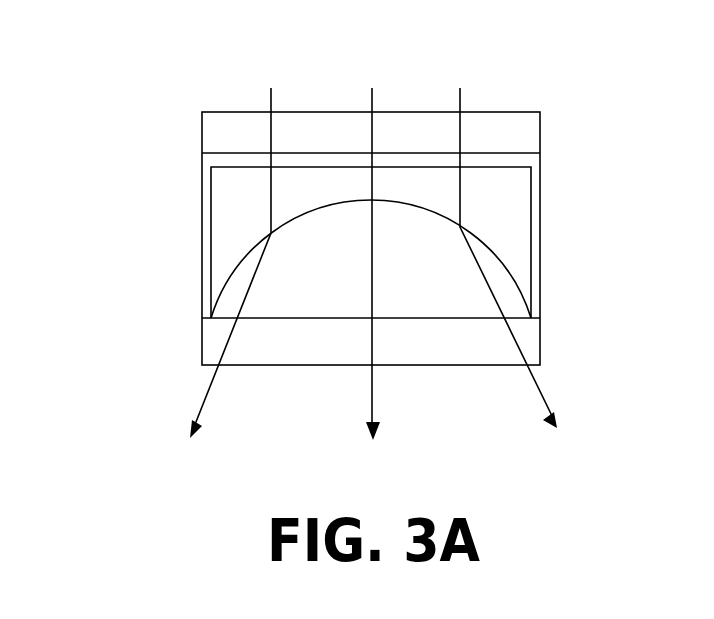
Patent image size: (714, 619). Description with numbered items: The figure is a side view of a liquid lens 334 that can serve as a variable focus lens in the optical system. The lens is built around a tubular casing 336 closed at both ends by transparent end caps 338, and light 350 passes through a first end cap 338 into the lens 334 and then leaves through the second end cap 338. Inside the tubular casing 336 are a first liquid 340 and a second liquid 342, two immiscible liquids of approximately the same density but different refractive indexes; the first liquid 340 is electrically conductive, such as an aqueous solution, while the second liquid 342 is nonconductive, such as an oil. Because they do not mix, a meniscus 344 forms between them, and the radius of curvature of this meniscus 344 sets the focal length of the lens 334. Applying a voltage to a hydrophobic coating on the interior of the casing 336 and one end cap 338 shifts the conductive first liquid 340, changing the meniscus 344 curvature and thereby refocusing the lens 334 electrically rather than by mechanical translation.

The liquid lens 334 is at (114, 58).
The tubular casing 336 is at (200, 262).
The transparent end caps 338 is at (531, 131).
The first liquid 340 is at (314, 280).
The second liquid 342 is at (314, 186).
The meniscus 344 is at (430, 216).
The light 350 is at (369, 100).